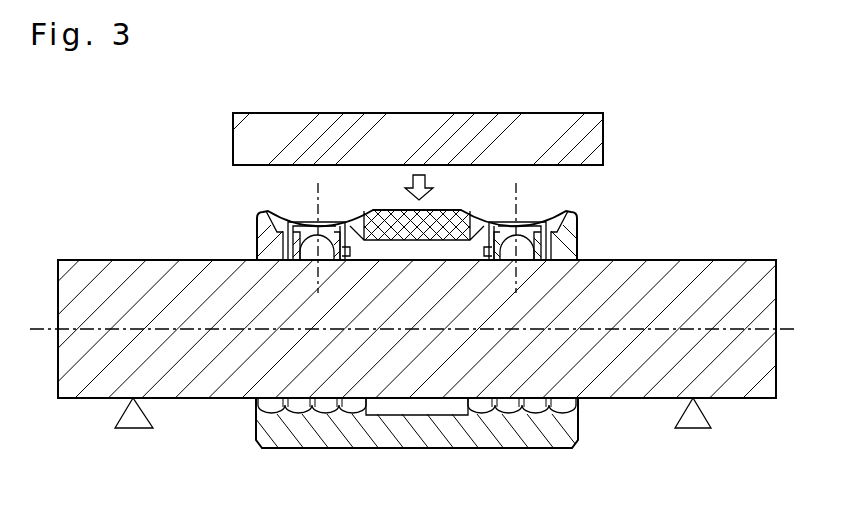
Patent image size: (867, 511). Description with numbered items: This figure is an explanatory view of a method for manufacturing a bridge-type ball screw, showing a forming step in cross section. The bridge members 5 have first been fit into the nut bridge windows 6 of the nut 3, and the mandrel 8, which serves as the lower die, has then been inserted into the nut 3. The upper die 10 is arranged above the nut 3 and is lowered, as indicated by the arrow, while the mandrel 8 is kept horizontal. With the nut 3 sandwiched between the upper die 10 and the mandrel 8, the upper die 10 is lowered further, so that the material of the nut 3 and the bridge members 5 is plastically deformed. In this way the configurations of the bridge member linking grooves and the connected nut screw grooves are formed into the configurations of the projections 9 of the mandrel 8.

The nut 3 is at (251, 216).
The bridge member 5 is at (314, 221).
The nut bridge window 6 is at (344, 227).
The mandrel 8 is at (152, 260).
The projection 9 is at (318, 262).
The upper die 10 is at (520, 122).